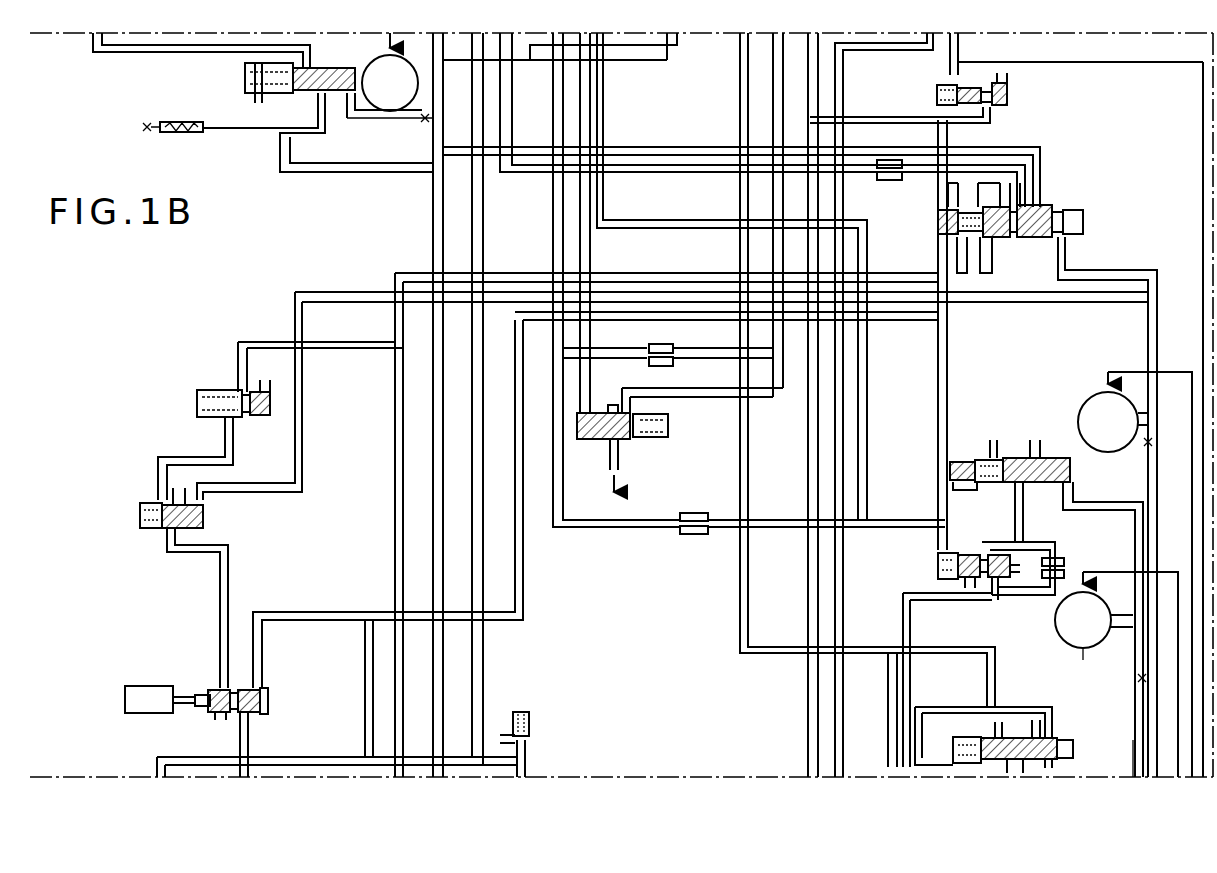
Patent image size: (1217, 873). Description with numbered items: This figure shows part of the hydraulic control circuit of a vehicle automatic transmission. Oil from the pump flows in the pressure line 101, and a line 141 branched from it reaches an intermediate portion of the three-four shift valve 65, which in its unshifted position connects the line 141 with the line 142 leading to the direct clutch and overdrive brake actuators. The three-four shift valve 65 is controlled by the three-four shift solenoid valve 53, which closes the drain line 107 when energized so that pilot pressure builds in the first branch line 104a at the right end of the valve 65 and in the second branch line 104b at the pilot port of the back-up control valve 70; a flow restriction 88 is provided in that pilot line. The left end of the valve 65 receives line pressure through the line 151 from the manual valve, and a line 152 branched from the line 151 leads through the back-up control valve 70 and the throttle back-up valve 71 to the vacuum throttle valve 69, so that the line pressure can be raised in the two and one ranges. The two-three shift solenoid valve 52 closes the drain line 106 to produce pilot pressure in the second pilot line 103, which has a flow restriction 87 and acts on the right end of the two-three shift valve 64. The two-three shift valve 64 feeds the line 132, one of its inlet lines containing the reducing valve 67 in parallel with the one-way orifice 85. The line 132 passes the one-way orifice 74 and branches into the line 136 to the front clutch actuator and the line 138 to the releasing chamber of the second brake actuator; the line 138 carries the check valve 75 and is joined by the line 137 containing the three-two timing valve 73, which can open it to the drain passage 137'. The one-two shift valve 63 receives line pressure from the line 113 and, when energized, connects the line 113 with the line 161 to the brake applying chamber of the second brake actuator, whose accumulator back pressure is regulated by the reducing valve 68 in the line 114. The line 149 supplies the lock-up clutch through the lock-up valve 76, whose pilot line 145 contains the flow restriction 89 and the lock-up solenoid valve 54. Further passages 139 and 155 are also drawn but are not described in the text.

The 2-3 shift solenoid valve 52 is at (1055, 625).
The 3-4 shift solenoid valve 53 is at (1088, 410).
The lock-up solenoid valve 54 is at (370, 112).
The 1-2 shift valve 63 is at (1060, 737).
The 2-3 shift valve 64 is at (1045, 457).
The 3-4 shift valve 65 is at (1050, 207).
The reducing valve 67 is at (1000, 596).
The reducing valve 68 is at (1007, 100).
The vacuum throttle valve 69 is at (265, 692).
The back-up control valve 70 is at (205, 525).
The throttle back-up valve 71 is at (258, 420).
The 3-2 timing valve 73 is at (605, 413).
The one-way orifice 74 is at (695, 535).
The check valve 75 is at (675, 350).
The lock-up valve 76 is at (245, 78).
The one-way orifice 85 is at (1065, 566).
The flow restriction 87 is at (1140, 678).
The flow restriction 88 is at (1146, 455).
The flow restriction 89 is at (425, 124).
The pressure line 101 is at (445, 677).
The second pilot line 103 is at (1133, 740).
The first branch line 104a is at (1115, 270).
The second branch line 104b is at (1050, 304).
The drain line 106 is at (1095, 648).
The drain line 107 is at (1144, 442).
The line 113 is at (853, 767).
The line 114 is at (880, 117).
The line 132 is at (780, 530).
The line 136 is at (640, 48).
The line 137 is at (702, 242).
The drain passage 137' is at (654, 468).
The line 138 is at (645, 356).
The oil passage 139 is at (868, 380).
The line 141 is at (680, 147).
The line 142 is at (650, 172).
The pilot line 145 is at (372, 135).
The line 149 is at (485, 230).
The line 151 is at (403, 460).
The line 152 is at (347, 350).
The oil passage 155 is at (330, 612).
The line 161 is at (748, 653).